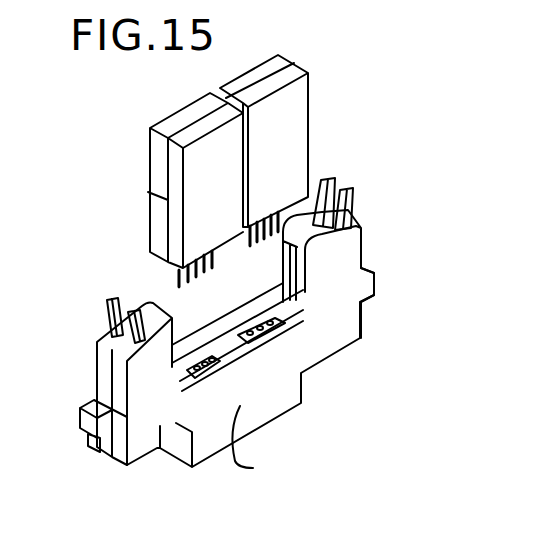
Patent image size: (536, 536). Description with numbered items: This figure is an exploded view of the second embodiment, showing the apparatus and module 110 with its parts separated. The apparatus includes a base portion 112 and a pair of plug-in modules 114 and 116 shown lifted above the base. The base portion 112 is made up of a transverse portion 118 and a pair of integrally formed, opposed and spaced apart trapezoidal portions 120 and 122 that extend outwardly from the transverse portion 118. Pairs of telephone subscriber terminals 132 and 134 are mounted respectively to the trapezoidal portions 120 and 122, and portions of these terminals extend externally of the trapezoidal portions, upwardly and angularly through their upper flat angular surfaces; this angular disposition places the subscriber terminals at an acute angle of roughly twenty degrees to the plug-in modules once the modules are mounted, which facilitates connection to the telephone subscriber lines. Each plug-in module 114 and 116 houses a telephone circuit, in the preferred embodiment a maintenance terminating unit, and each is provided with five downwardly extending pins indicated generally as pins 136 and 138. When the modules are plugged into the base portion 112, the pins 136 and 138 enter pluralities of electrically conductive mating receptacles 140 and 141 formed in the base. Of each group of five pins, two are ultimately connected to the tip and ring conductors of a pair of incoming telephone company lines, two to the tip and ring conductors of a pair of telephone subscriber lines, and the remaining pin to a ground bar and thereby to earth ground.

The apparatus and module 110 is at (133, 231).
The base portion 112 is at (385, 35).
The plug-in module 114 is at (190, 112).
The plug-in module 116 is at (257, 72).
The transverse portion 118 is at (250, 370).
The trapezoidal portion 120 is at (140, 365).
The trapezoidal portion 122 is at (347, 247).
The telephone subscriber terminals 132 is at (110, 326).
The telephone subscriber terminals 134 is at (350, 186).
The pins 136 is at (222, 265).
The pins 138 is at (275, 233).
The electrically conductive mating receptacles 140 is at (196, 358).
The electrically conductive mating receptacles 141 is at (258, 322).